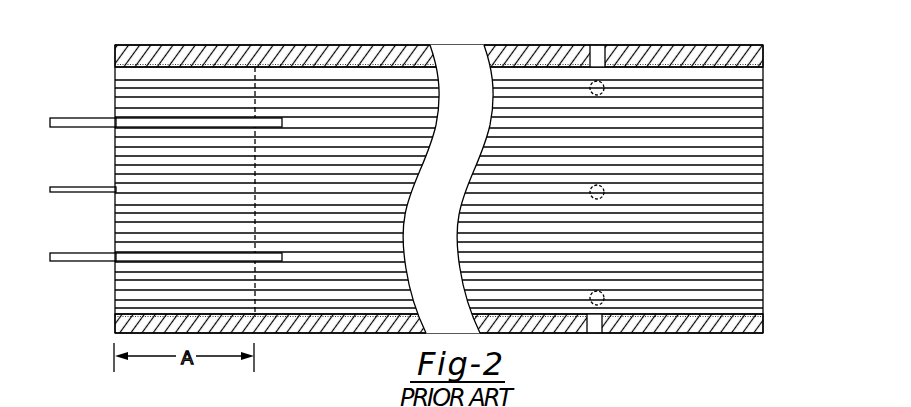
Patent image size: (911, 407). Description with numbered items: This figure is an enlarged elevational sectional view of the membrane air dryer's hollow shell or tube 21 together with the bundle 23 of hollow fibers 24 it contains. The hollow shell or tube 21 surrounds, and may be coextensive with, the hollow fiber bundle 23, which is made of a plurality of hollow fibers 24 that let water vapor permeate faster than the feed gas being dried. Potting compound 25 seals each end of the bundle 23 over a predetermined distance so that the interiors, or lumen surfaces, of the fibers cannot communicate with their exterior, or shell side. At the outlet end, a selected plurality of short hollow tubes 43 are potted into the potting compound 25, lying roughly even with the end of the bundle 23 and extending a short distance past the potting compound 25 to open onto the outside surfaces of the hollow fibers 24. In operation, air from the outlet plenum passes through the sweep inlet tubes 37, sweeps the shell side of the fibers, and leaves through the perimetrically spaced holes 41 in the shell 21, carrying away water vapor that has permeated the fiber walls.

The hollow shell or tube 21 is at (557, 45).
The bundle of hollow fibers 23 is at (110, 302).
The hollow fibers 24 is at (763, 145).
The potting compound 25 is at (115, 67).
The sweep inlet tubes 37 is at (48, 122).
The holes (sweep outlet) 41 is at (604, 91).
The short hollow tubes 43 is at (145, 116).